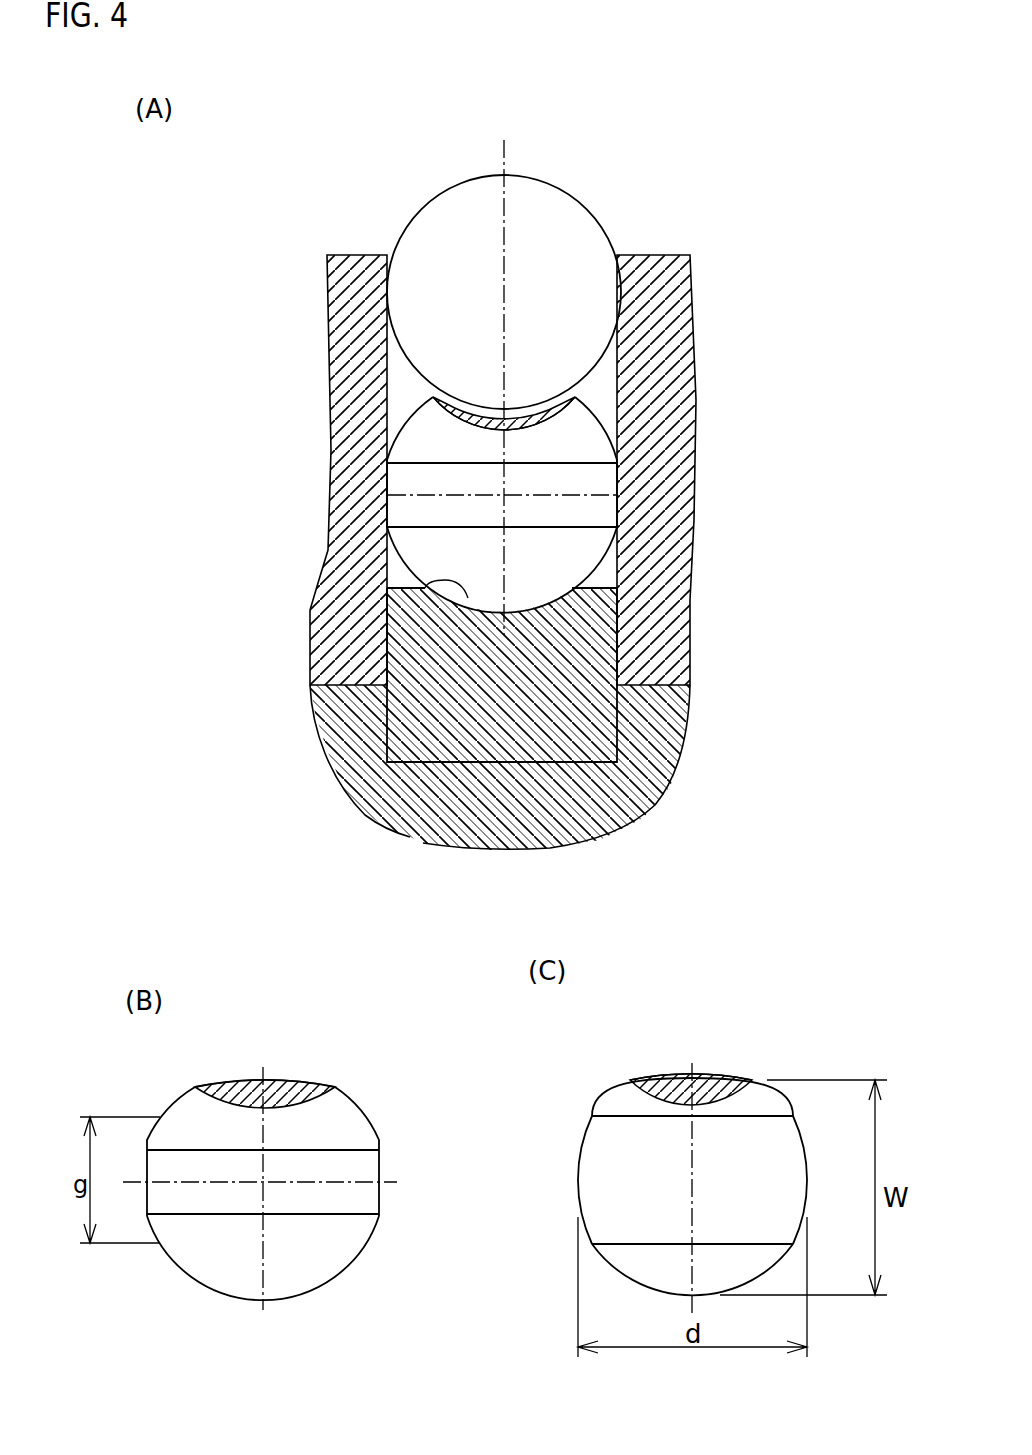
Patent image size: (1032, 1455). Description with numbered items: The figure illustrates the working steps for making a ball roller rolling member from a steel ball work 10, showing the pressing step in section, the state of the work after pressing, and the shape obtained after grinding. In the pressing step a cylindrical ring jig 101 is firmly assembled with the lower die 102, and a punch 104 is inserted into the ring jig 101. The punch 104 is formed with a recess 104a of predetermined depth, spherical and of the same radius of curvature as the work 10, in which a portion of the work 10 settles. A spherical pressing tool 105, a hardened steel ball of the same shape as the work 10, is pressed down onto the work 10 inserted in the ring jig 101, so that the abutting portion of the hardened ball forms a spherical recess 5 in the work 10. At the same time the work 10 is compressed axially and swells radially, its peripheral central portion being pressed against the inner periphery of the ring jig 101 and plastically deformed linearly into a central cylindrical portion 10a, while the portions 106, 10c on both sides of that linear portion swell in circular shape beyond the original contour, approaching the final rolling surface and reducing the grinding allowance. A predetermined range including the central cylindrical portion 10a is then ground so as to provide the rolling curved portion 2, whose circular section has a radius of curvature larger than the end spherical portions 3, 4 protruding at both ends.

The ring jig 101 is at (667, 257).
The lower die 102 is at (355, 705).
The punch 104 is at (420, 700).
The recess 104a is at (386, 586).
The spherical pressing tool 105 is at (600, 313).
The swelled portion 106 is at (409, 408).
The work 10 is at (600, 417).
The central cylindrical portion 10a is at (387, 478).
The swelled portion 10c is at (387, 550).
The spherical recess 5 is at (493, 407).
The rolling curved portion 2 is at (807, 1192).
The end spherical portion 3 is at (353, 1100).
The end spherical portion 4 is at (303, 1290).